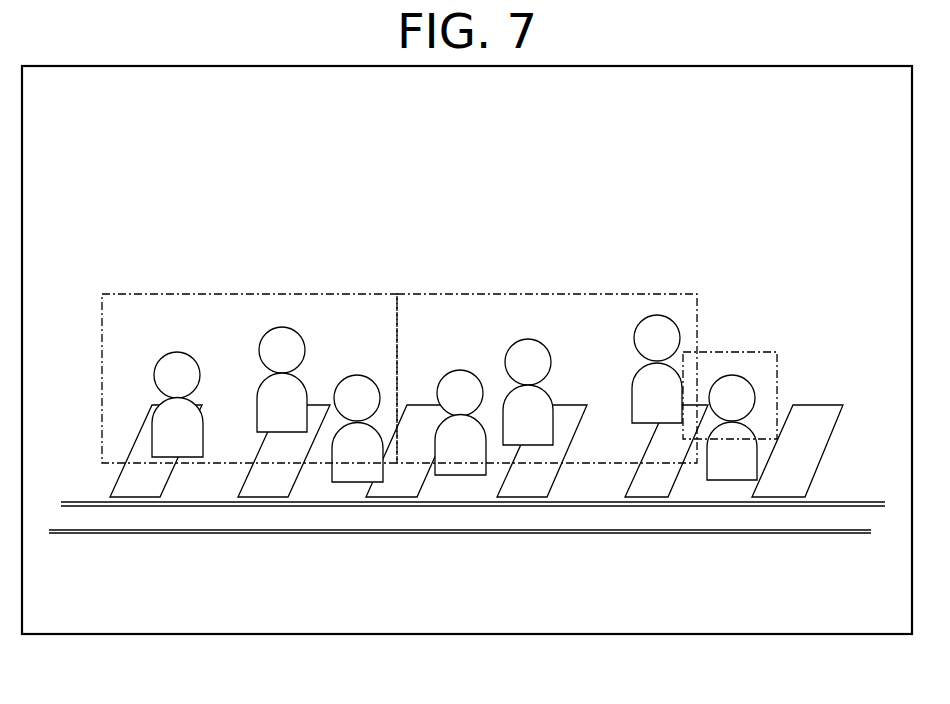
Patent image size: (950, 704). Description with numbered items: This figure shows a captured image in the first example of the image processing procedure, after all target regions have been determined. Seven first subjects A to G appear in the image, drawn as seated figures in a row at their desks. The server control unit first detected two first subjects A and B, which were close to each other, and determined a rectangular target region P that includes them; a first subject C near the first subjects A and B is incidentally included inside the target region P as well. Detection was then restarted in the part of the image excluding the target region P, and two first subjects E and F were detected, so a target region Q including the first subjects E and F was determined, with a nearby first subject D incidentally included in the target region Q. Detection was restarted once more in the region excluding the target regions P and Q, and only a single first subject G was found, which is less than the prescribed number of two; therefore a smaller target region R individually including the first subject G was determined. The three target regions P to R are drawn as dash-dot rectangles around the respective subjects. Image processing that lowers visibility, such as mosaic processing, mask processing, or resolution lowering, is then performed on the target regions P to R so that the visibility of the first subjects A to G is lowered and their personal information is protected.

The first subject A is at (182, 437).
The first subject B is at (285, 420).
The first subject C is at (355, 473).
The first subject D is at (462, 470).
The first subject E is at (525, 422).
The first subject F is at (663, 403).
The first subject G is at (732, 470).
The target region P is at (218, 293).
The target region Q is at (537, 293).
The target region R is at (742, 352).